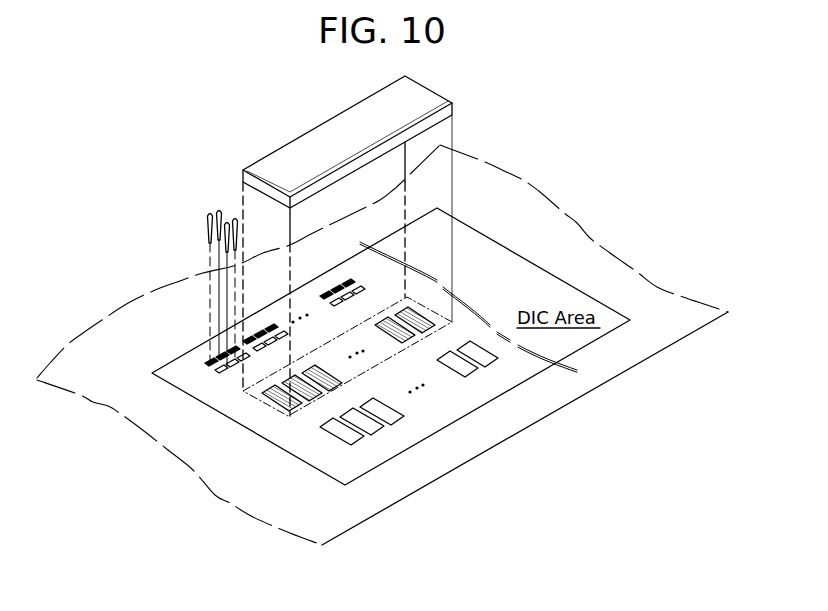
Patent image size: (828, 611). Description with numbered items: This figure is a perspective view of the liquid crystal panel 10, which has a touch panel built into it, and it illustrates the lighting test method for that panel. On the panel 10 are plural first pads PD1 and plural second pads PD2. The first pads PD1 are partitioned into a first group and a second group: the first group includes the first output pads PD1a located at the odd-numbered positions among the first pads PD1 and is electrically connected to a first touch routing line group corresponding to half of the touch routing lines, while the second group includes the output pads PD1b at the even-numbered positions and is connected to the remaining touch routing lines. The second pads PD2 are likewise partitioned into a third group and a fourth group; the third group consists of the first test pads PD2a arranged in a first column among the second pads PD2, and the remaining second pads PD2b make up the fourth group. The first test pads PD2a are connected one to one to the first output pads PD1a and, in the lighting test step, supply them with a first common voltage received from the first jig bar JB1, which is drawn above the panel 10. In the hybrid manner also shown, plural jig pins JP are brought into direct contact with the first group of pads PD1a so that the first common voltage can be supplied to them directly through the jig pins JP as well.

The liquid crystal panel 10 is at (672, 325).
The first jig bar JB1 is at (303, 152).
The jig pins JP is at (210, 215).
The first pads PD1 is at (217, 408).
The first output pads PD1a is at (210, 364).
The first pads (unconnected) PD1b is at (230, 372).
The second pads PD2 is at (335, 445).
The first test pads PD2a is at (290, 403).
The second pads (plain) PD2b is at (325, 425).